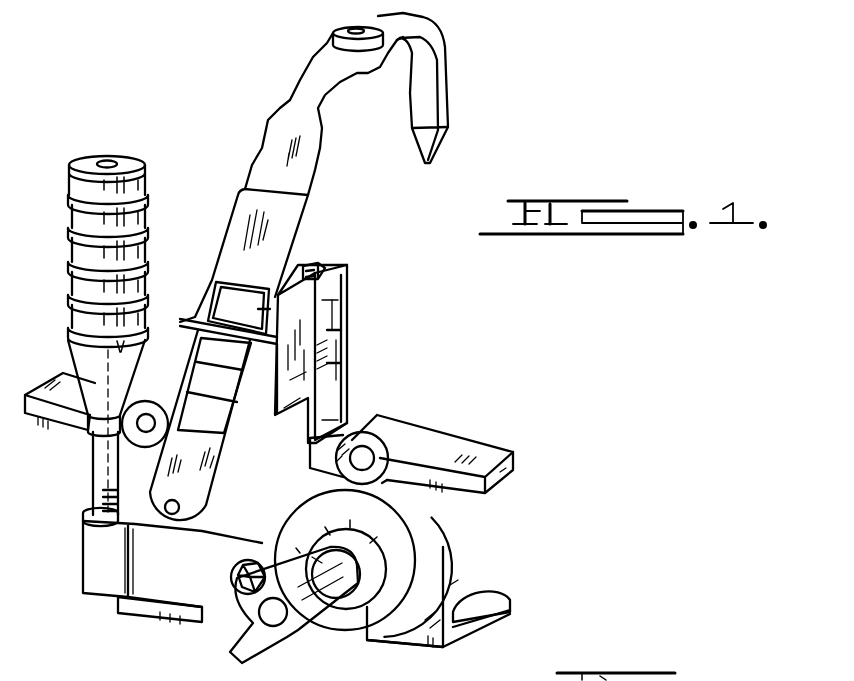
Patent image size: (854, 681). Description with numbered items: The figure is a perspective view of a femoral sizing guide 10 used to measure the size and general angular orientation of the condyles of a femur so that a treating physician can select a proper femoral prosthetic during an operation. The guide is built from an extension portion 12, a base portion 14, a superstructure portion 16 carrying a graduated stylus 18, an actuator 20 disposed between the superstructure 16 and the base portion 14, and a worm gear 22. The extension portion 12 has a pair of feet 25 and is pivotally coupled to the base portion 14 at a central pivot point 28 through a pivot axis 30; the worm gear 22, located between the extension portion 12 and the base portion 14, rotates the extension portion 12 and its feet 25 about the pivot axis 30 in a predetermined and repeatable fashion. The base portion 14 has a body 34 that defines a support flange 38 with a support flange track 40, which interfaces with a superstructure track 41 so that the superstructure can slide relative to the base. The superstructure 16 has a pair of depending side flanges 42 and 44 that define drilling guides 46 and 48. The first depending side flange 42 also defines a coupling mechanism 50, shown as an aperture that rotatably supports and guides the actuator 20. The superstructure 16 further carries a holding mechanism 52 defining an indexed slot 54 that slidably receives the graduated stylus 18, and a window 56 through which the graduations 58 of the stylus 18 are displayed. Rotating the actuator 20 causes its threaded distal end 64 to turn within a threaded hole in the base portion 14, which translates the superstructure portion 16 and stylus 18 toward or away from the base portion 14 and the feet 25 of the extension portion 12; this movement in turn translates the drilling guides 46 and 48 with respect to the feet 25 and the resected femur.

The femoral sizing guide 10 is at (170, 113).
The extension portion 12 is at (452, 610).
The base portion 14 is at (333, 402).
The superstructure portion 16 is at (310, 252).
The graduated stylus 18 is at (300, 155).
The actuator 20 is at (83, 257).
The worm gear 22 is at (417, 547).
The feet 25 is at (212, 617).
The central pivot point 28 is at (232, 582).
The pivot axis 30 is at (262, 585).
The body 34 is at (315, 365).
The support flange 38 is at (327, 327).
The support flange track 40 is at (323, 262).
The superstructure track 41 is at (333, 288).
The first depending side flange 42 is at (60, 410).
The second depending side flange 44 is at (495, 450).
The drilling guide 46 is at (170, 400).
The drilling guide 48 is at (403, 430).
The coupling mechanism 50 is at (100, 425).
The holding mechanism 52 is at (203, 278).
The indexed slot 54 is at (310, 225).
The window 56 is at (212, 322).
The graduations 58 is at (228, 427).
The threaded distal end 64 is at (110, 528).